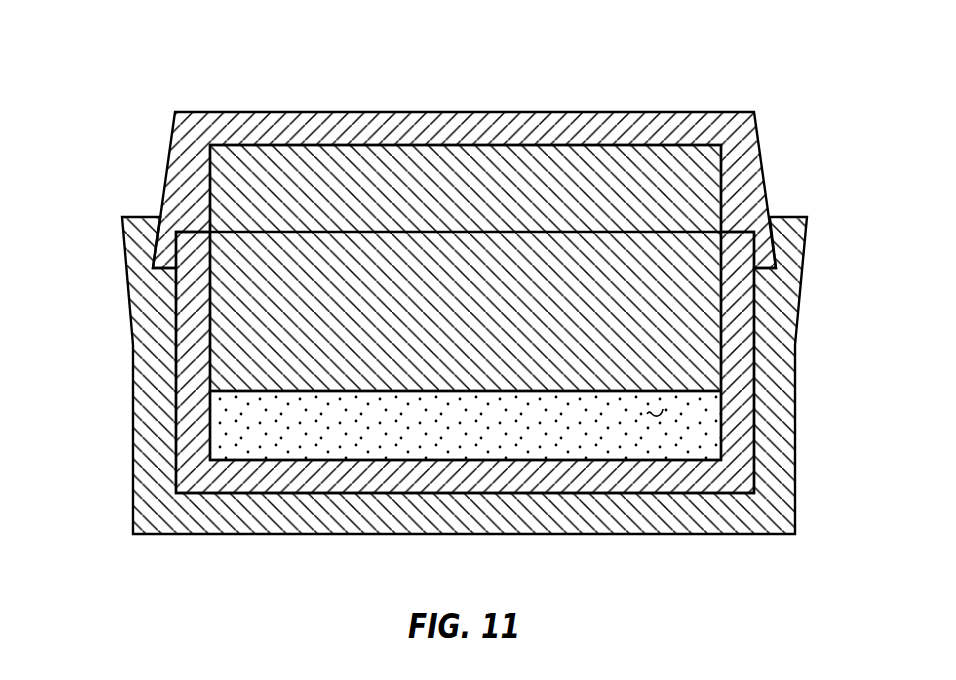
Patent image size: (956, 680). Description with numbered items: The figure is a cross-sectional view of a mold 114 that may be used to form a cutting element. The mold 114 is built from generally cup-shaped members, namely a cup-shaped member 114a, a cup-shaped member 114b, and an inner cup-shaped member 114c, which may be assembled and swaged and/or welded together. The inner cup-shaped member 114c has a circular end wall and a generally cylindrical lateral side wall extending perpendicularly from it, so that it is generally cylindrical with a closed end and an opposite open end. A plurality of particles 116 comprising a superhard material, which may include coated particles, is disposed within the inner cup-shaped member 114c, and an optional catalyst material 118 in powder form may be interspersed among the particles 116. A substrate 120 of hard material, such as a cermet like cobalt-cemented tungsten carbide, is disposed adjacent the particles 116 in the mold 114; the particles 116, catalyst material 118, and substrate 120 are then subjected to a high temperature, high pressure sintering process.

The mold 114 is at (448, 274).
The cup-shaped member 114a is at (188, 173).
The cup-shaped member 114b is at (134, 346).
The inner cup-shaped member 114c is at (202, 474).
The plurality of particles 116 is at (700, 443).
The catalyst material 118 is at (663, 409).
The substrate 120 is at (680, 185).